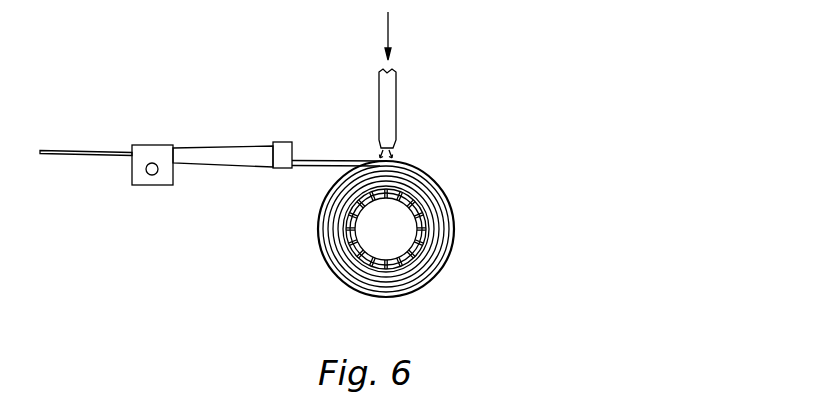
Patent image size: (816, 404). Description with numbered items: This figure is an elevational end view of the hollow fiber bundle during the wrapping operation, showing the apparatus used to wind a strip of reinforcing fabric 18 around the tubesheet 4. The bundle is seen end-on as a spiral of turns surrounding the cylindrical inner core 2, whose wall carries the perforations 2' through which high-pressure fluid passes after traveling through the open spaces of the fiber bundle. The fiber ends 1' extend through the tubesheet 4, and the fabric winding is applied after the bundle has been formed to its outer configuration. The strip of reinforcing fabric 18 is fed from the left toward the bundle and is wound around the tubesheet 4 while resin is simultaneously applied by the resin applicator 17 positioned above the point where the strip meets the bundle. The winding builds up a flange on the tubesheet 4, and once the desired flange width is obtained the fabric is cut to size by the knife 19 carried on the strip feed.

The resin applicator 17 is at (397, 116).
The strip of reinforcing fabric 18 is at (330, 160).
The knife 19 is at (283, 168).
The tubesheet 4 is at (438, 189).
The fiber ends 1' is at (411, 229).
The inner core 2 is at (386, 229).
The perforations 2' is at (386, 229).